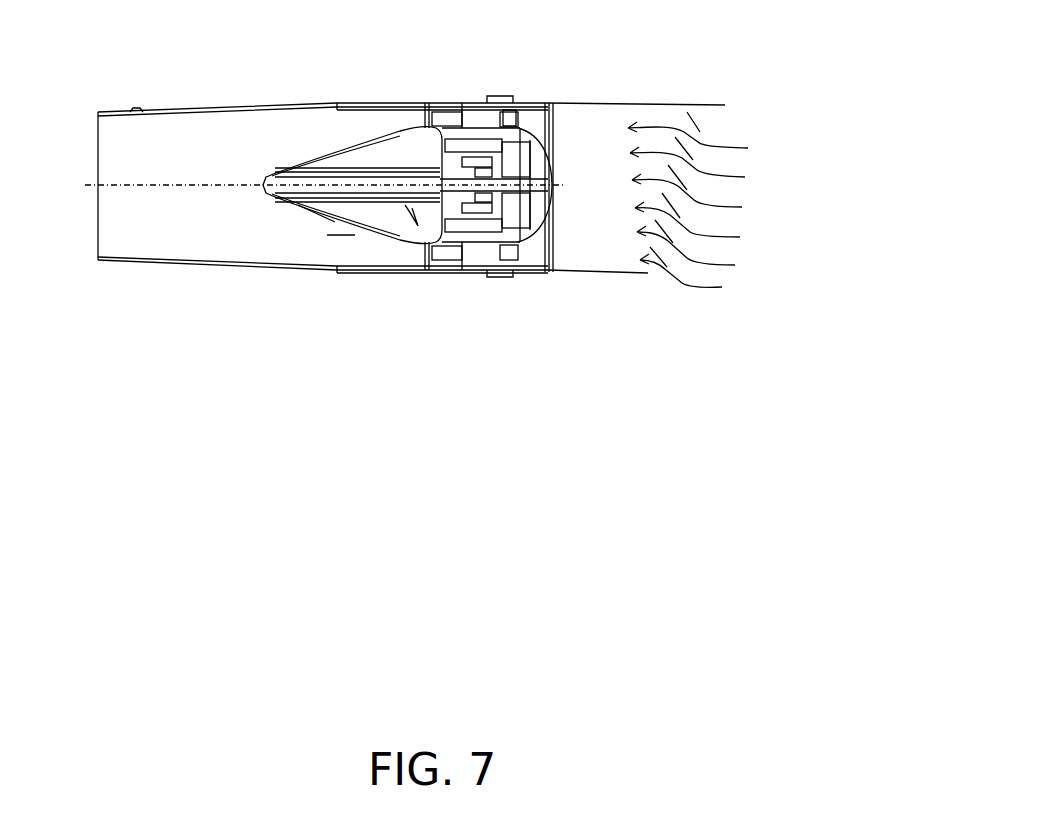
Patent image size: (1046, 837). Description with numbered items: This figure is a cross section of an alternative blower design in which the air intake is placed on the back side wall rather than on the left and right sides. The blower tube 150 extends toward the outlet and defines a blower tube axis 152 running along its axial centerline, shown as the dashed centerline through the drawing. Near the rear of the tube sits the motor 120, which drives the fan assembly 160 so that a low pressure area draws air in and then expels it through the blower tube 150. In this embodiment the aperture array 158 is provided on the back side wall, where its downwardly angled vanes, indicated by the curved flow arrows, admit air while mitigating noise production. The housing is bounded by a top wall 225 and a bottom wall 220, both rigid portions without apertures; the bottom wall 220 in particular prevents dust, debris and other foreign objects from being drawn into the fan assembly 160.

The motor 120 is at (473, 198).
The blower tube 150 is at (190, 265).
The blower tube axis 152 is at (135, 185).
The aperture array 158 is at (735, 132).
The fan assembly 160 is at (518, 117).
The bottom wall 220 is at (600, 273).
The top wall 225 is at (596, 102).